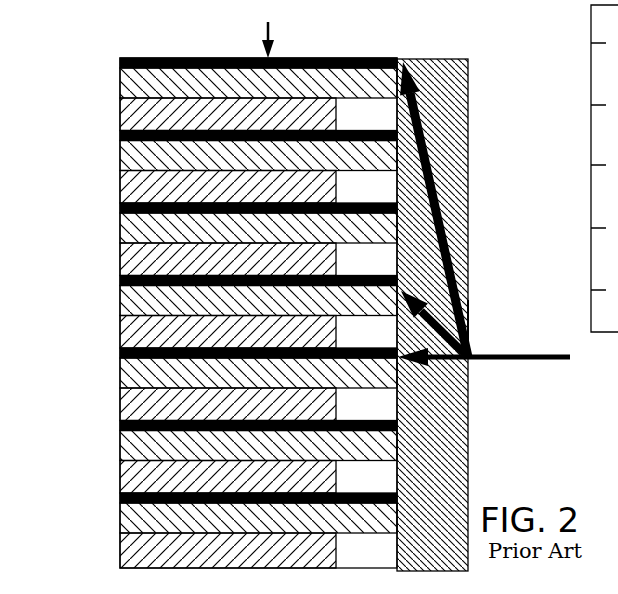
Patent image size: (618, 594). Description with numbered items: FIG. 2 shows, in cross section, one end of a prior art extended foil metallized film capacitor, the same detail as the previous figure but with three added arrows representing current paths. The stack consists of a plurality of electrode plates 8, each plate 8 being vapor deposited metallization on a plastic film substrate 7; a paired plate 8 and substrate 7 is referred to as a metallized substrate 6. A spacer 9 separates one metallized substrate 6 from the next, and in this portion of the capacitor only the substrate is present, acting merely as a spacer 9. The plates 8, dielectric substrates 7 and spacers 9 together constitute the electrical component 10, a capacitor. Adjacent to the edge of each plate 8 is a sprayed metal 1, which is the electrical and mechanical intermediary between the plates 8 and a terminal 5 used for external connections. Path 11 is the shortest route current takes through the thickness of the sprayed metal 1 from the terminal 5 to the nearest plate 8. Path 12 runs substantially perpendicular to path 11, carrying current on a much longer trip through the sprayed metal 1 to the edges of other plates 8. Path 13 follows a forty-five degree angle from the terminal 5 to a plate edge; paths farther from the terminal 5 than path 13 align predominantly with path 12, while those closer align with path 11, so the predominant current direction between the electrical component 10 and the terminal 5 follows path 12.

The sprayed metal 1 is at (427, 58).
The terminal 5 is at (498, 360).
The metallized substrate 6 is at (212, 287).
The plastic film substrate 7 is at (120, 90).
The electrode plate 8 is at (190, 57).
The spacer 9 is at (120, 112).
The electrical component 10 is at (268, 30).
The path 11 is at (465, 316).
The path 12 is at (437, 200).
The path 13 is at (433, 313).